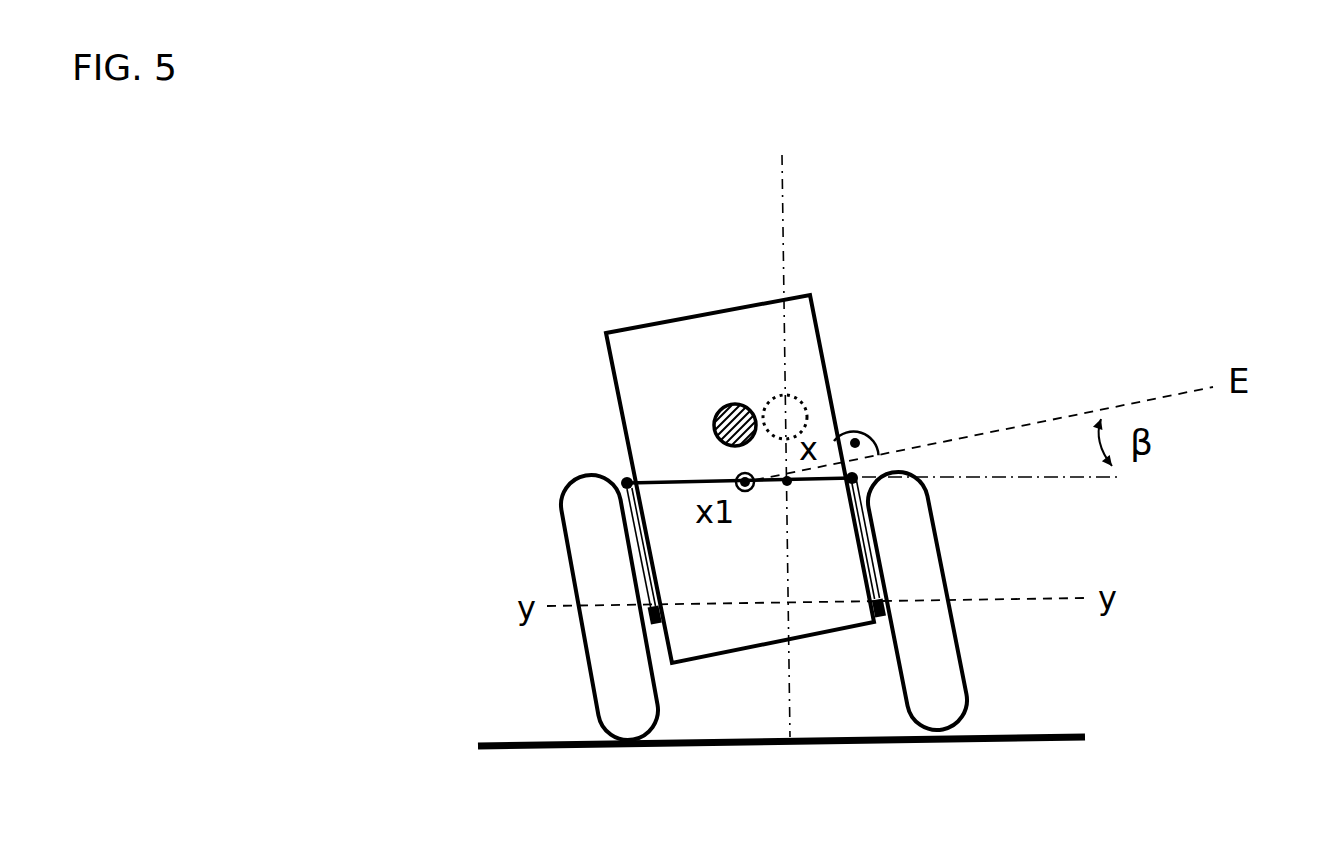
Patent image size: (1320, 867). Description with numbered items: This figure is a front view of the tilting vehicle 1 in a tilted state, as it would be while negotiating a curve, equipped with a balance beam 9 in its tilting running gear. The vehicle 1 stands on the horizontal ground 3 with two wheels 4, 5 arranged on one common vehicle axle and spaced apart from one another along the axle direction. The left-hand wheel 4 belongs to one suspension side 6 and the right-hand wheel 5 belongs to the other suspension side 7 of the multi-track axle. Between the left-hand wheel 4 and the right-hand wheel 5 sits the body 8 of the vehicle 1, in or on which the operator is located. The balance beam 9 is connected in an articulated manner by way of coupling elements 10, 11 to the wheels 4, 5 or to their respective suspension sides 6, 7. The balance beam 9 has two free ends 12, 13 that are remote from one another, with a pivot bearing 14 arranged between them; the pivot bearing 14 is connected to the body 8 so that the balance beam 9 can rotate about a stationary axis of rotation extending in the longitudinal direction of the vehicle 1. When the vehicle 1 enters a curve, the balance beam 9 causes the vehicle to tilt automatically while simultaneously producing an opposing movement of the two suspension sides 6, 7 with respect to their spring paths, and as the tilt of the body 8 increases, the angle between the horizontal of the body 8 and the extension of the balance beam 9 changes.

The vehicle 1 is at (1152, 310).
The ground 3 is at (539, 804).
The left-hand wheel 4 is at (593, 687).
The right-hand wheel 5 is at (960, 663).
The suspension side 6 is at (430, 586).
The suspension side 7 is at (1176, 566).
The body 8 is at (693, 317).
The balance beam 9 is at (700, 478).
The coupling element 10 is at (643, 577).
The coupling element 11 is at (872, 553).
The free end 12 is at (608, 458).
The free end 13 is at (874, 467).
The pivot bearing 14 is at (747, 491).